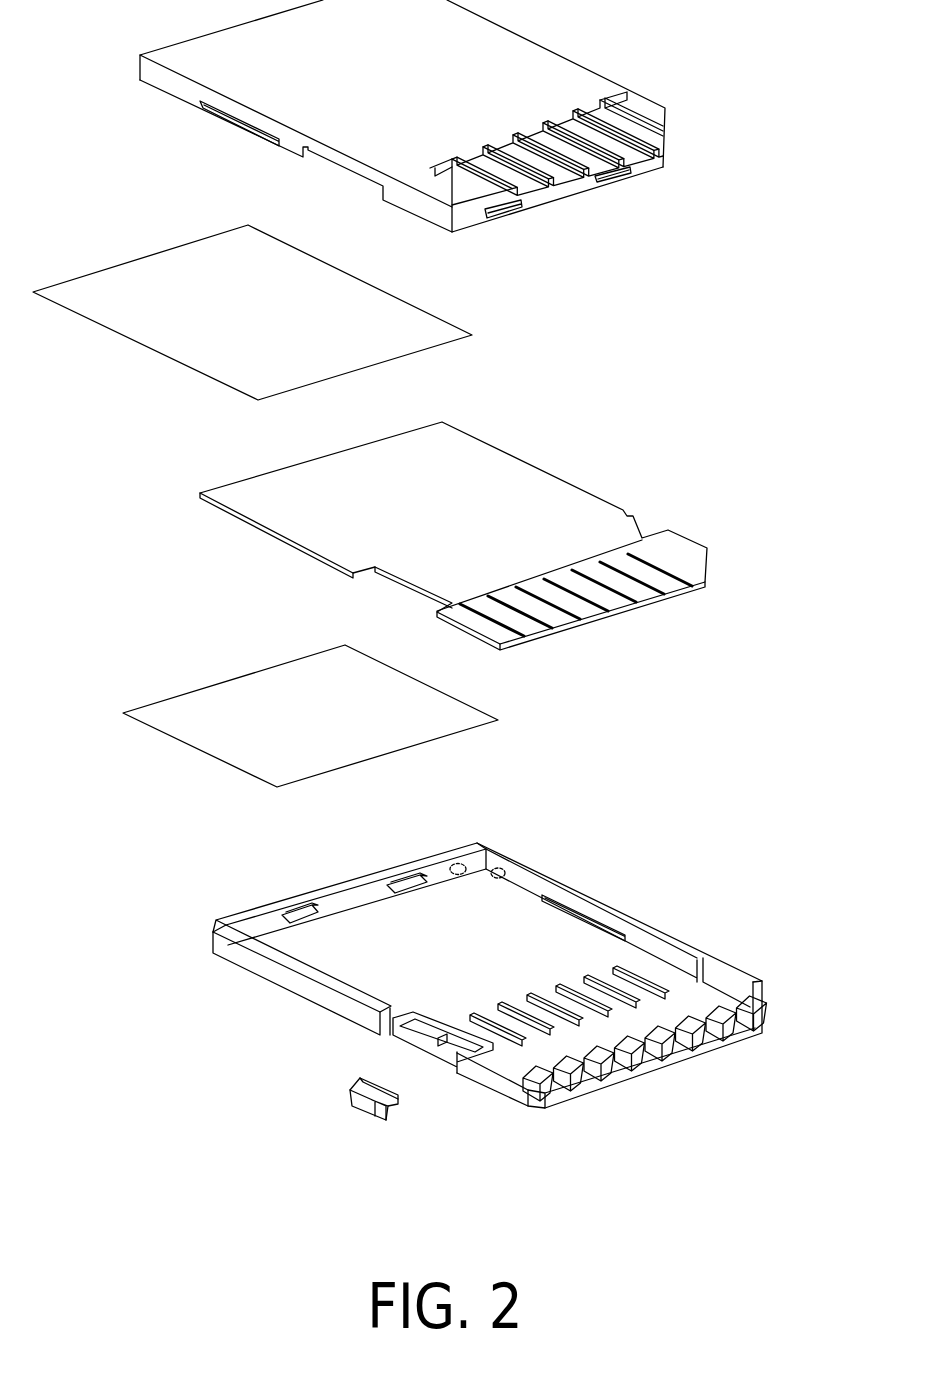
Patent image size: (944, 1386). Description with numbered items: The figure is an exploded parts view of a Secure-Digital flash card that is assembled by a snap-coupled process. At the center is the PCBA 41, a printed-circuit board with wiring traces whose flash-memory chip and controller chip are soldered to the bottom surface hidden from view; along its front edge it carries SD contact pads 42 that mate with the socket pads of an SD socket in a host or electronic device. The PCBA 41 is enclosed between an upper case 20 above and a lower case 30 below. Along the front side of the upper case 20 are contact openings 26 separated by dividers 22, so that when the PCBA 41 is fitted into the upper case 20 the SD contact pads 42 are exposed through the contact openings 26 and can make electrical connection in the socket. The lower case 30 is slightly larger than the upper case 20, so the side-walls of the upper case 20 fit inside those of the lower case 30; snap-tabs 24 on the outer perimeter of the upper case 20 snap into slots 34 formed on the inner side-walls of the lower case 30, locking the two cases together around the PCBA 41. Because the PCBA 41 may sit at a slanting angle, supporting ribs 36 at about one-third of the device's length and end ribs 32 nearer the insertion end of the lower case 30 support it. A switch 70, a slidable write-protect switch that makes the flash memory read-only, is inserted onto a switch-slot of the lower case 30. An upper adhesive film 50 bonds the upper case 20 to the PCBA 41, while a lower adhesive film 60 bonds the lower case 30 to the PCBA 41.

The upper case 20 is at (388, 92).
The dividers 22 is at (615, 163).
The snap-tabs 24 is at (214, 117).
The contact openings 26 is at (540, 186).
The lower case 30 is at (451, 973).
The end ribs 32 is at (653, 1037).
The slots 34 is at (317, 917).
The supporting ribs 36 is at (657, 987).
The PCBA 41 is at (432, 536).
The SD contact pads 42 is at (602, 600).
The upper adhesive film 50 is at (237, 330).
The lower adhesive film 60 is at (290, 735).
The switch 70 is at (358, 1115).